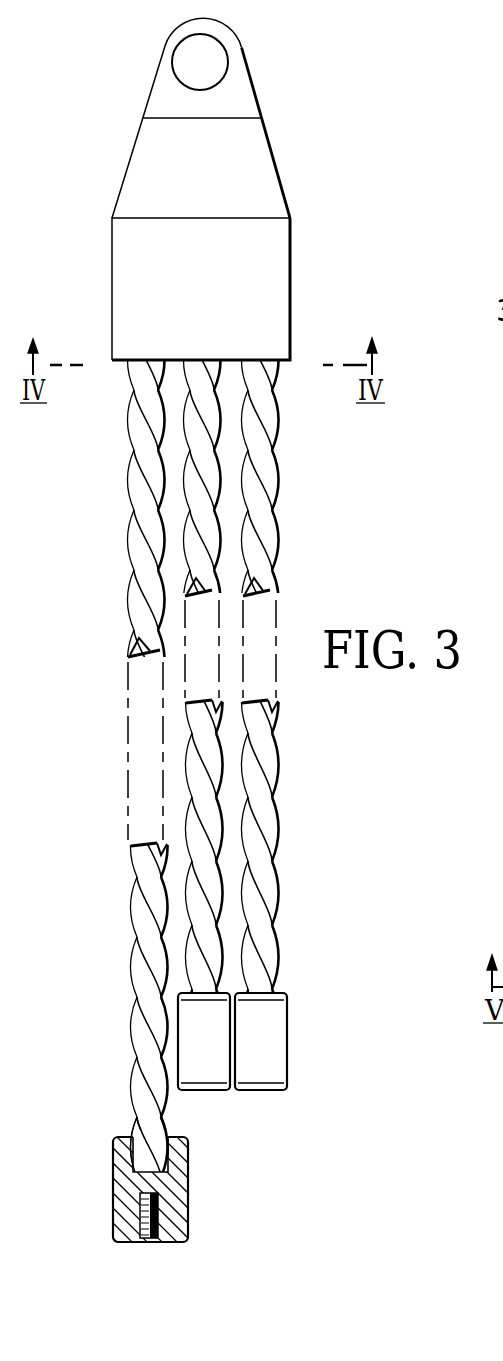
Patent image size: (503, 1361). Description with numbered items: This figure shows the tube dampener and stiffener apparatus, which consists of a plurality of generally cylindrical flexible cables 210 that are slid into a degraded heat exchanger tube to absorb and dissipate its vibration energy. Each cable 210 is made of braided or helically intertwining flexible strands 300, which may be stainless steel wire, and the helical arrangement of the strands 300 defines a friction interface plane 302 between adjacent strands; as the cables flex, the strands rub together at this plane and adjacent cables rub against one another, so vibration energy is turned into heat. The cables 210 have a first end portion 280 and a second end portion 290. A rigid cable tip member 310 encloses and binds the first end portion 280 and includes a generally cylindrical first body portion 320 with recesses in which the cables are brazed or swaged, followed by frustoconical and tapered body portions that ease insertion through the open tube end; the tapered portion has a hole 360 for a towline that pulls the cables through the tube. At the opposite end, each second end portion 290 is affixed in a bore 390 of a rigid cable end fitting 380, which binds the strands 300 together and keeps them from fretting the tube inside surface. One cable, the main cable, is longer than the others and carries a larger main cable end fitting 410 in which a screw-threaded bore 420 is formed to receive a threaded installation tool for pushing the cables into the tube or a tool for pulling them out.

The flexible cables 210 is at (303, 561).
The first end portion 280 is at (277, 470).
The second end portion 290 is at (277, 980).
The flexible strands 300 is at (267, 793).
The friction interface plane 302 is at (267, 824).
The cable tip member 310 is at (110, 285).
The first body portion 320 is at (293, 312).
The hole 360 is at (222, 57).
The cable end fitting 380 is at (287, 1053).
The bore 390 is at (137, 1137).
The main cable end fitting 410 is at (117, 1195).
The screw-threaded bore 420 is at (147, 1243).